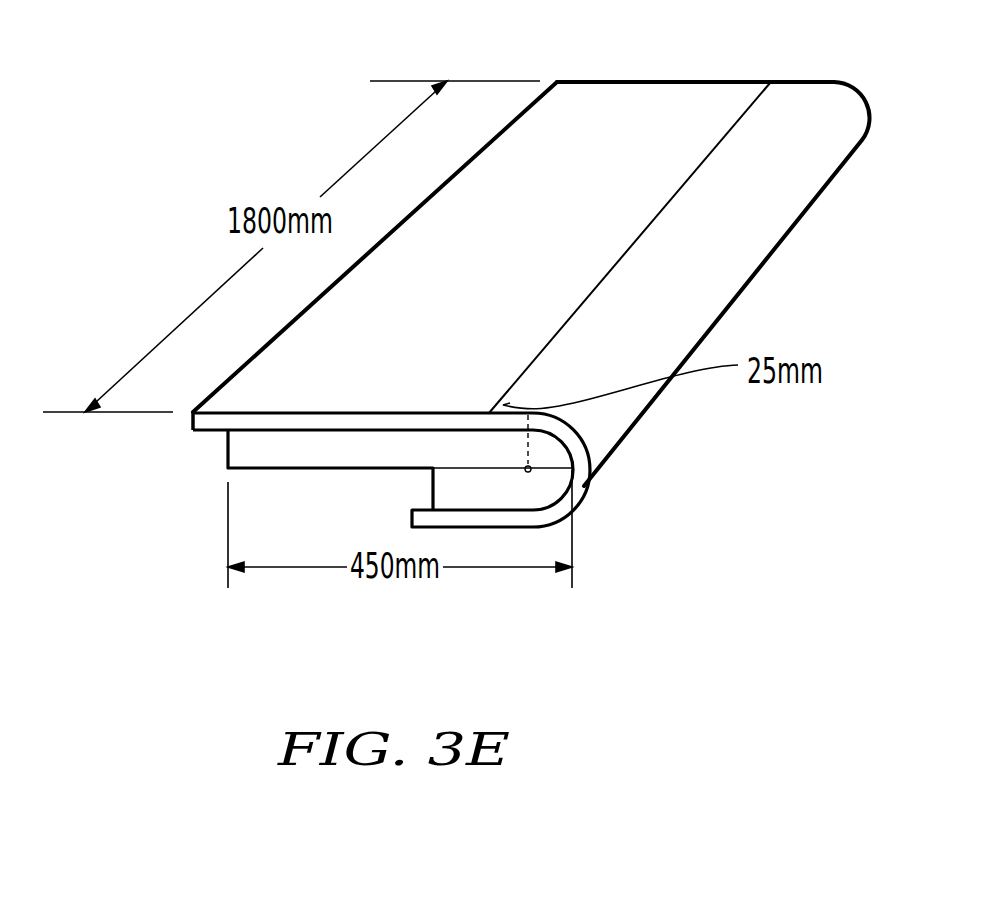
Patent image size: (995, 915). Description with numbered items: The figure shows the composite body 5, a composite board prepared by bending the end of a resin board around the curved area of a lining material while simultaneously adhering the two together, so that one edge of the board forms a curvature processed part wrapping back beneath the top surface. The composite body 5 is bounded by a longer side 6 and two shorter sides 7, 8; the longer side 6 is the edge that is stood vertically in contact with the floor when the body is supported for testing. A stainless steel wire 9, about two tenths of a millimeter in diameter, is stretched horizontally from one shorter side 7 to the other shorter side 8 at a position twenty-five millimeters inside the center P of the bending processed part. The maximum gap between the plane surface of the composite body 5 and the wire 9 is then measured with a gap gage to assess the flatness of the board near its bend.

The composite body 5 is at (313, 103).
The longer side 6 is at (282, 331).
The shorter side 7 is at (633, 82).
The shorter side 8 is at (228, 432).
The wire 9 is at (748, 110).
The center of the bending processed part P is at (560, 470).